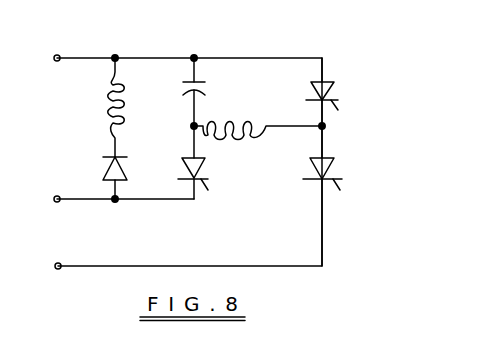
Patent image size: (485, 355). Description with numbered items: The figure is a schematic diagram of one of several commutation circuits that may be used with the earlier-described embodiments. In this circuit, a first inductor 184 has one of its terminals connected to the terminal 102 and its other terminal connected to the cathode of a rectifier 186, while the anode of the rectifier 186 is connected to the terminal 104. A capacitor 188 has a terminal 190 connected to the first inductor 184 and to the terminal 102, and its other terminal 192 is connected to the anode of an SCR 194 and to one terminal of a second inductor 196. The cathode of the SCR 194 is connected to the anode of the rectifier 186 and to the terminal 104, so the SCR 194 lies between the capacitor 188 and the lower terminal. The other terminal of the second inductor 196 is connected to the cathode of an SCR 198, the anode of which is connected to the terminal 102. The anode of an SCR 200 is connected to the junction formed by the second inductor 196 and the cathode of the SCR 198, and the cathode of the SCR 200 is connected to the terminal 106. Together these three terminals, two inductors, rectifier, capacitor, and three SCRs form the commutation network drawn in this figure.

The terminal 102 is at (56, 55).
The terminal 104 is at (55, 203).
The terminal 106 is at (56, 269).
The first inductor 184 is at (103, 103).
The rectifier 186 is at (104, 159).
The capacitor 188 is at (194, 92).
The terminal of the capacitor 190 is at (206, 84).
The other terminal of the capacitor 192 is at (180, 85).
The SCR 194 is at (205, 170).
The second inductor 196 is at (229, 138).
The SCR 198 is at (336, 88).
The SCR 200 is at (338, 164).